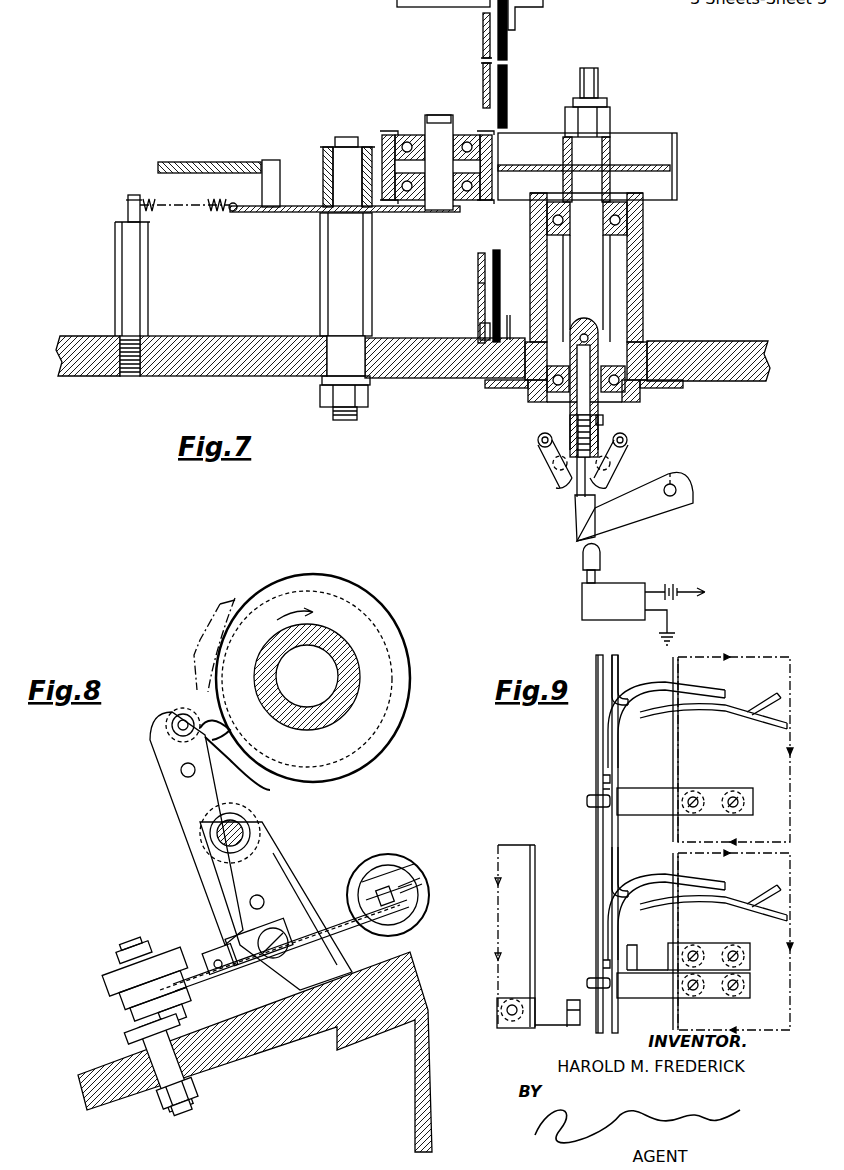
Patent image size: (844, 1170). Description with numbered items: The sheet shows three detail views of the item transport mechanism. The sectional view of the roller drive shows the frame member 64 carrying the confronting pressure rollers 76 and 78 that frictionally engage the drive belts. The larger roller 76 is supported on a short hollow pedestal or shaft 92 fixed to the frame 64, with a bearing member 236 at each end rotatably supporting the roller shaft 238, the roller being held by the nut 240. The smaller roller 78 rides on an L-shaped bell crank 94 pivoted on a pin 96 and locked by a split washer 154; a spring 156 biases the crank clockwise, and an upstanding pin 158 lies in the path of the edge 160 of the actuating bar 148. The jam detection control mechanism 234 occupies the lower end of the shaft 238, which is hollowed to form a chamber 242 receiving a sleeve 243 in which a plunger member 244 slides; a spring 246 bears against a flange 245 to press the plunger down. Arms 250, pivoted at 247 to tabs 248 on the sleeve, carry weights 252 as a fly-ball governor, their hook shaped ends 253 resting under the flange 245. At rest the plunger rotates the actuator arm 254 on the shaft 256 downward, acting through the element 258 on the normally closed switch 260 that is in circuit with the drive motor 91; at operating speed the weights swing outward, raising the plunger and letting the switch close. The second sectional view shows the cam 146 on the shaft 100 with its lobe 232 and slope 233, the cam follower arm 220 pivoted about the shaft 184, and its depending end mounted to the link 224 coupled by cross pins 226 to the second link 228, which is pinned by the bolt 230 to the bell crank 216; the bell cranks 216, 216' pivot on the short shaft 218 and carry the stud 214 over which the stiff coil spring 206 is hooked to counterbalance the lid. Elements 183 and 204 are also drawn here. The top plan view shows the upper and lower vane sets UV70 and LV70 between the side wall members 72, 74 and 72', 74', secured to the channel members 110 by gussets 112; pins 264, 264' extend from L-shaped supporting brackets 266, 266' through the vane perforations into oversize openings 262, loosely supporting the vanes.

In FIG. 7, the frame member 64 is at (226, 336).
In FIG. 8, the frame member 64 is at (415, 973).
In FIG. 7, the side wall member 72 is at (465, 60).
In FIG. 9, the side wall member 72 is at (581, 844).
In FIG. 7, the side wall member 74 is at (523, 64).
In FIG. 9, the side wall member 74 is at (697, 844).
In FIG. 7, the pressure roller 76 is at (663, 145).
In FIG. 7, the pressure roller 78 is at (385, 135).
In FIG. 7, the drive motor 91 is at (694, 590).
In FIG. 7, the hollow pedestal or shaft 92 is at (646, 268).
In FIG. 7, the bell crank 94 is at (398, 214).
In FIG. 7, the pin 96 is at (320, 280).
In FIG. 8, the shaft 100 is at (363, 677).
In FIG. 9, the channel member 110 is at (715, 656).
In FIG. 9, the gusset 112 is at (645, 960).
In FIG. 8, the cam 146 is at (413, 716).
In FIG. 7, the item pressure roller actuating member 148 is at (216, 162).
In FIG. 7, the split washer 154 is at (333, 140).
In FIG. 7, the spring 156 is at (218, 212).
In FIG. 7, the upstanding projection or pin 158 is at (270, 212).
In FIG. 7, the edge 160 is at (271, 160).
In FIG. 8, the lever 183 is at (303, 848).
In FIG. 8, the shaft 184 is at (217, 833).
In FIG. 8, the pawl plate 204 is at (196, 628).
In FIG. 8, the coil spring 206 is at (402, 862).
In FIG. 8, the stud 214 is at (396, 890).
In FIG. 8, the bell crank 216 is at (284, 924).
In FIG. 8, the bell crank 216' is at (431, 904).
In FIG. 8, the short shaft 218 is at (122, 952).
In FIG. 8, the cam follower arm 220 is at (168, 772).
In FIG. 8, the link 224 is at (252, 937).
In FIG. 8, the cross pin 226 is at (213, 952).
In FIG. 8, the second link 228 is at (125, 1008).
In FIG. 8, the bolt 230 is at (118, 976).
In FIG. 8, the lobe 232 is at (200, 690).
In FIG. 8, the slope 233 is at (264, 786).
In FIG. 7, the jam detection control mechanism 234 is at (551, 540).
In FIG. 7, the bearing member 236 is at (628, 224).
In FIG. 7, the roller shaft 238 is at (598, 296).
In FIG. 7, the nut 240 is at (606, 110).
In FIG. 7, the cylindrical recess or chamber 242 is at (600, 340).
In FIG. 7, the sleeve 243 is at (565, 405).
In FIG. 7, the plunger member 244 is at (570, 424).
In FIG. 7, the flange 245 is at (606, 488).
In FIG. 7, the spring 246 is at (603, 420).
In FIG. 7, the pivot 247 is at (553, 470).
In FIG. 7, the outrigger member or tab 248 is at (556, 490).
In FIG. 7, the arm 250 is at (543, 460).
In FIG. 7, the weight 252 is at (538, 442).
In FIG. 7, the hook shaped end 253 is at (577, 497).
In FIG. 7, the actuator arm 254 is at (660, 508).
In FIG. 7, the shaft 256 is at (680, 482).
In FIG. 7, the plunger 258 is at (583, 568).
In FIG. 7, the switch 260 is at (620, 615).
In FIG. 9, the oversize opening 262 is at (590, 975).
In FIG. 7, the pin 264 is at (443, 16).
In FIG. 9, the pin 264 is at (576, 891).
In FIG. 7, the pin 264' is at (470, 326).
In FIG. 7, the L-shaped supporting bracket 266 is at (526, 18).
In FIG. 9, the L-shaped supporting bracket 266 is at (685, 909).
In FIG. 7, the L-shaped supporting bracket 266' is at (460, 395).
In FIG. 7, the side wall member 72' is at (454, 287).
In FIG. 7, the side wall member 74' is at (473, 296).
In FIG. 7, the upper set of vanes UV70 is at (481, 56).
In FIG. 9, the upper set of vanes UV70 is at (608, 783).
In FIG. 7, the lower set of vanes LV70 is at (478, 266).